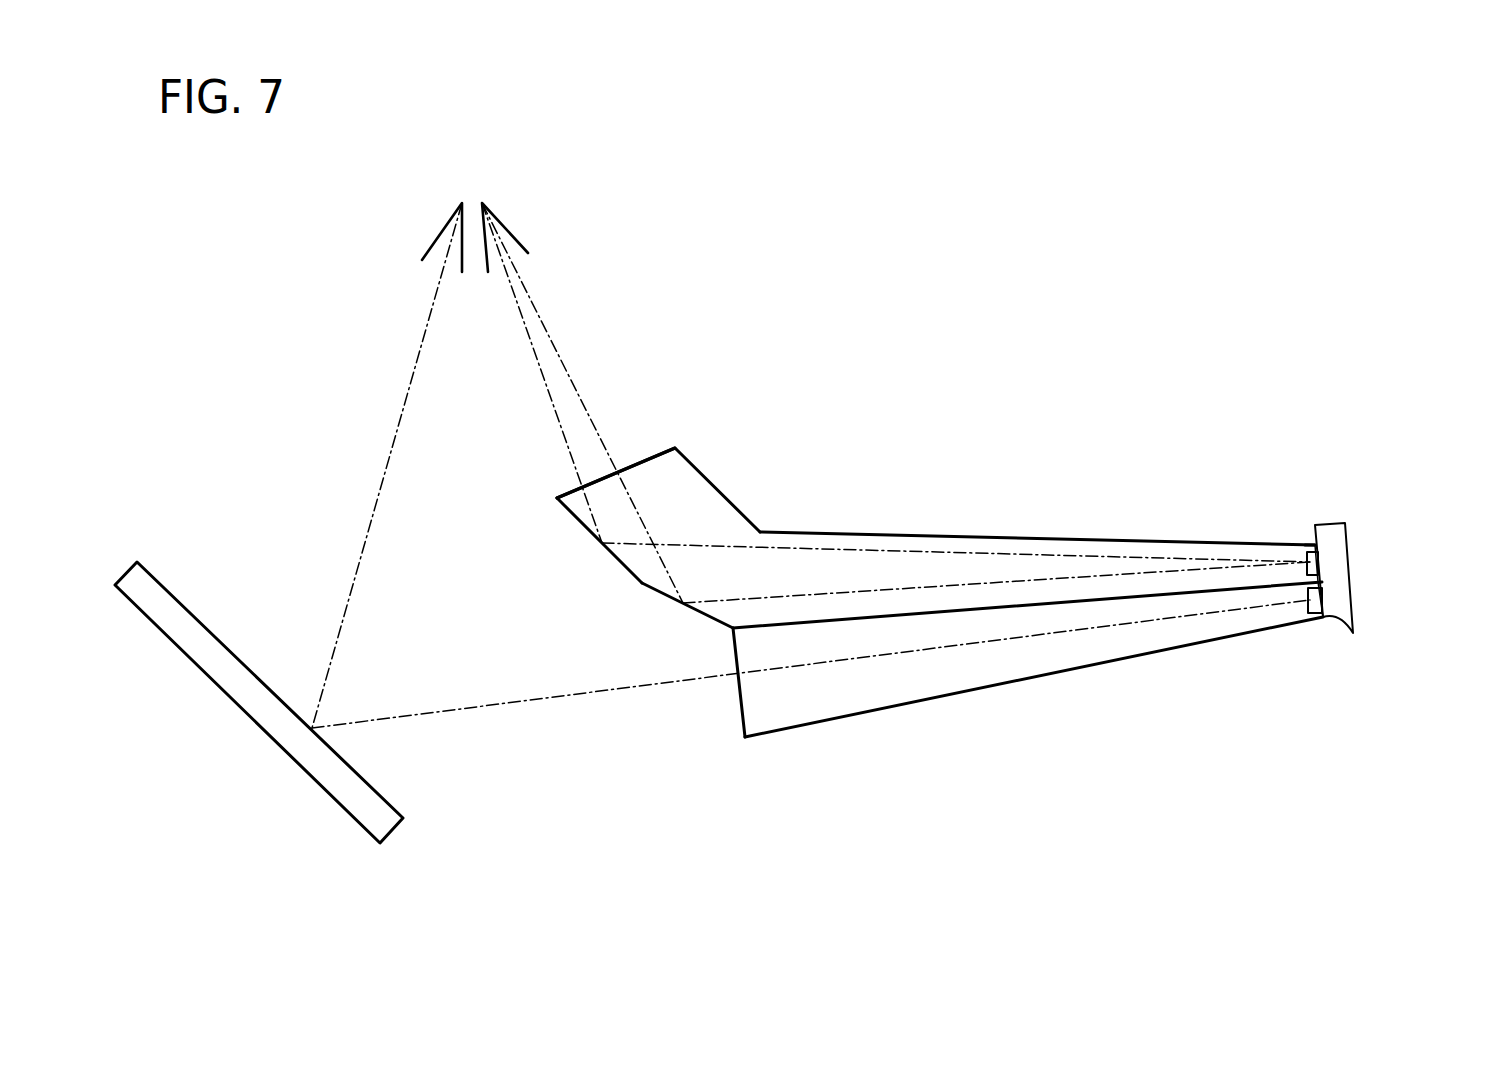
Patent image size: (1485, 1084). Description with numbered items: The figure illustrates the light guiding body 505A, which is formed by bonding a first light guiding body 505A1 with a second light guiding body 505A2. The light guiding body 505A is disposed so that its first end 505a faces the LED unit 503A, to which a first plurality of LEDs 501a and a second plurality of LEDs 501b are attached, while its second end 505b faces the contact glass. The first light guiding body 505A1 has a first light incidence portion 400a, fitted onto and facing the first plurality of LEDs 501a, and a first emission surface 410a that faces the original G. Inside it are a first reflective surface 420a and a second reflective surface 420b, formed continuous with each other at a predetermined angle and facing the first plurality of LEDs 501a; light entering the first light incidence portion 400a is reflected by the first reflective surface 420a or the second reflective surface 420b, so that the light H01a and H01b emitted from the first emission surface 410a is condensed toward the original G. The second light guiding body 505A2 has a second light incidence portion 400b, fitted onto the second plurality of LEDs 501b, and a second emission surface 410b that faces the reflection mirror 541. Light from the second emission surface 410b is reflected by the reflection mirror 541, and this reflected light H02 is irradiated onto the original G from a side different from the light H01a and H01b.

The original G is at (470, 186).
The light reflected by the reflection mirror H02 is at (387, 458).
The light emitted from the first emission surface H01a is at (540, 375).
The light emitted from the first emission surface H01b is at (532, 298).
The reflection mirror 541 is at (390, 803).
The second end 505b is at (668, 447).
The first emission surface 410a is at (565, 490).
The second reflective surface 420b is at (575, 520).
The first reflective surface 420a is at (658, 593).
The second emission surface 410b is at (738, 703).
The first light guiding body 505A1 is at (952, 535).
The light guiding body 505A is at (1087, 537).
The second light guiding body 505A2 is at (965, 692).
The first light incidence portion 400a is at (1292, 552).
The second light incidence portion 400b is at (1298, 610).
The first end 505a is at (1313, 537).
The LED unit 503A is at (1335, 522).
The first plurality of LEDs 501a is at (1320, 563).
The second plurality of LEDs 501b is at (1323, 602).